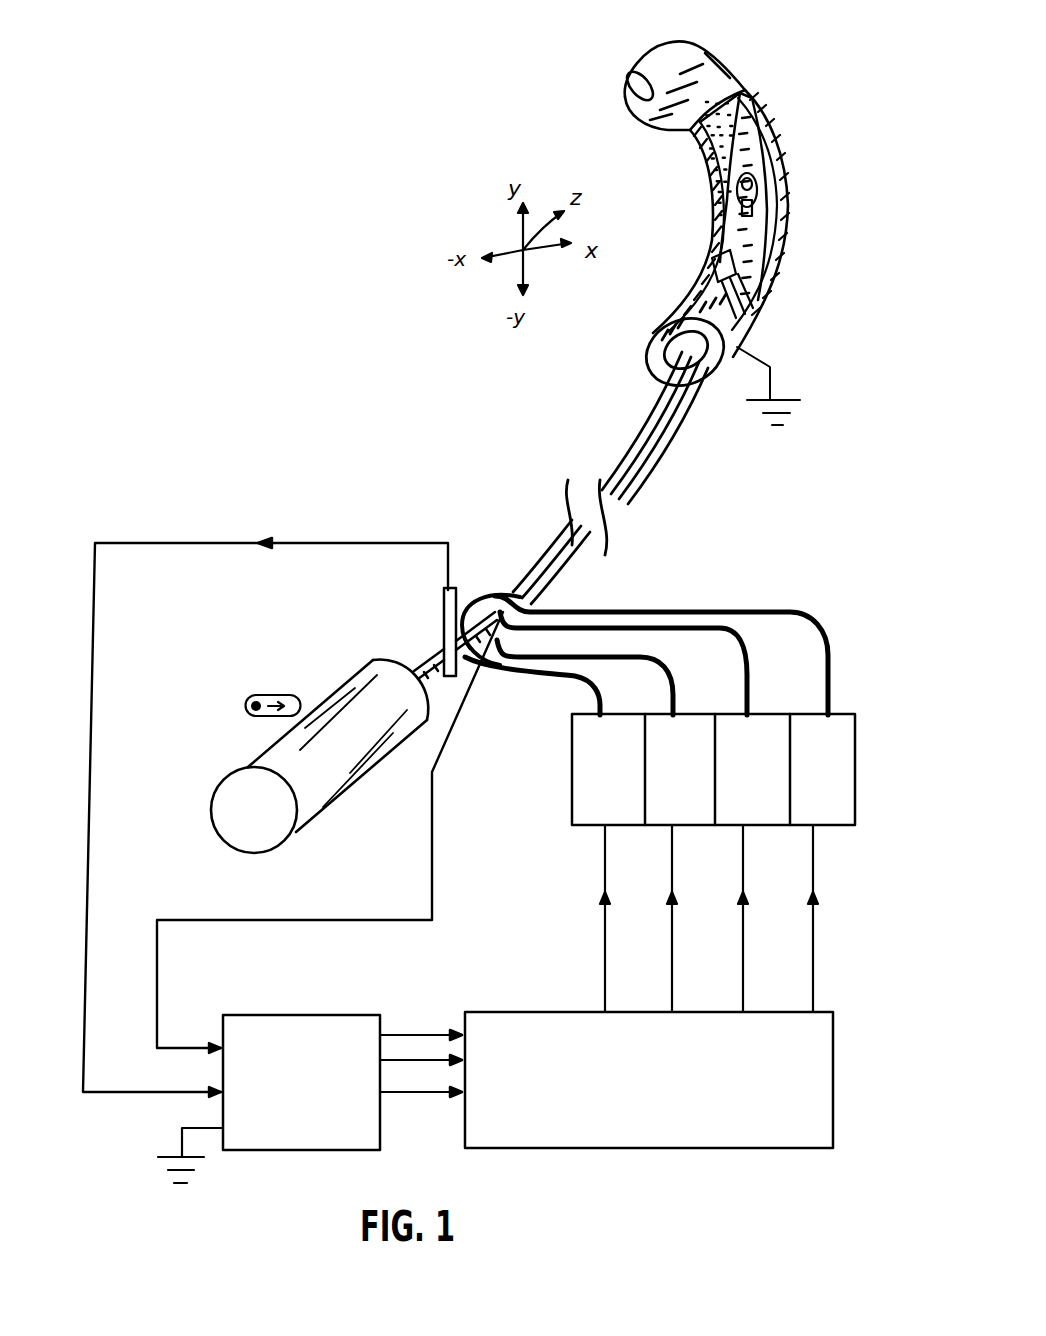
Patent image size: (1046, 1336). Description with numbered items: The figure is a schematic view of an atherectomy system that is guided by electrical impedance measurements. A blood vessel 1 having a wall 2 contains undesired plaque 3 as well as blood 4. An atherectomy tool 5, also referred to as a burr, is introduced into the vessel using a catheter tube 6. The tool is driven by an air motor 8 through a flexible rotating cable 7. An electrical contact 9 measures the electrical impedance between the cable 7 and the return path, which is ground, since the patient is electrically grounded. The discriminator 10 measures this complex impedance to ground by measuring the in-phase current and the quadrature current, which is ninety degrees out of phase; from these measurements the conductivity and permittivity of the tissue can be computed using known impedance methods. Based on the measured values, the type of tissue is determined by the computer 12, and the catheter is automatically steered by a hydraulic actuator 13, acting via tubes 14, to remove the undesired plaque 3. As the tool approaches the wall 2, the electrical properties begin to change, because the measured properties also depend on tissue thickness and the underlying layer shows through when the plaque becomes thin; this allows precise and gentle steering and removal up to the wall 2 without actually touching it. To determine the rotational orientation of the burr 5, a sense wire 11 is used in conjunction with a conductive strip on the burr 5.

The blood vessel 1 is at (720, 58).
The wall 2 is at (778, 156).
The undesired plaque 3 is at (742, 106).
The blood 4 is at (776, 230).
The atherectomy tool 5 is at (782, 186).
The catheter tube 6 is at (658, 456).
The flexible rotating cable 7 is at (428, 670).
The air motor 8 is at (256, 772).
The electrical contact 9 is at (454, 590).
The discriminator 10 is at (308, 1015).
The sense wire 11 is at (432, 888).
The computer 12 is at (518, 1012).
The hydraulic actuator 13 is at (840, 715).
The tubes 14 is at (705, 612).